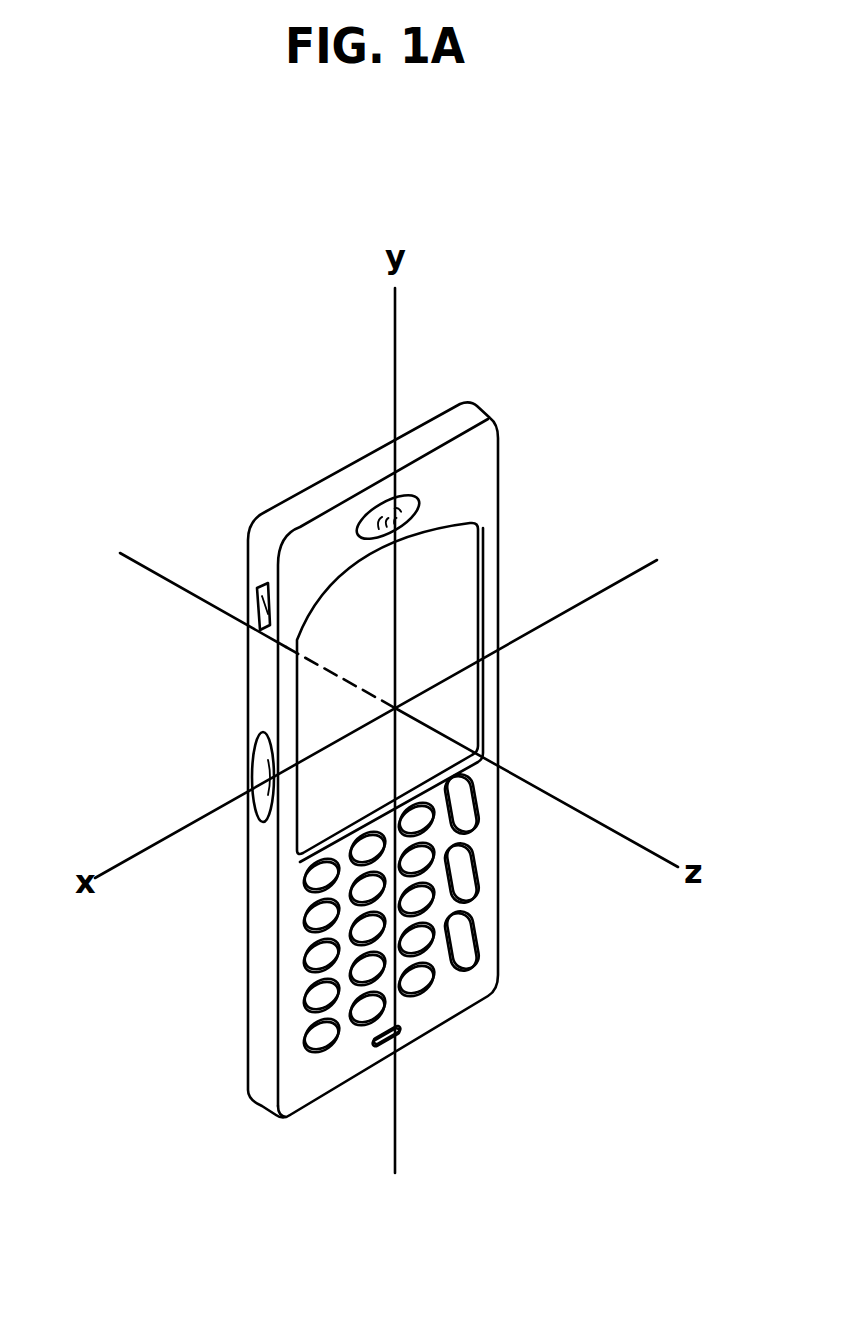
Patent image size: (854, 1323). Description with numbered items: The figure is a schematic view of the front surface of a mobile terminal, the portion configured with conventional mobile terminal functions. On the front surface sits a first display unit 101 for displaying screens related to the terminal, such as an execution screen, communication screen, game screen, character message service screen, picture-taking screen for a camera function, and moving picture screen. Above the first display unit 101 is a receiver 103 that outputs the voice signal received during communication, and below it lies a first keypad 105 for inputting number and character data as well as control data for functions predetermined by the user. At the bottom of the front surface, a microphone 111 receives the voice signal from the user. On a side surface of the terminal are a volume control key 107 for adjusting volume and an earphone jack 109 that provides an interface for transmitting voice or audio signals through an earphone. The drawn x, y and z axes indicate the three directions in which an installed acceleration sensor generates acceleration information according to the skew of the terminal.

The first display unit 101 is at (467, 585).
The receiver 103 is at (410, 488).
The first keypad 105 is at (510, 959).
The volume control key 107 is at (252, 793).
The earphone jack 109 is at (257, 590).
The microphone 111 is at (400, 1036).